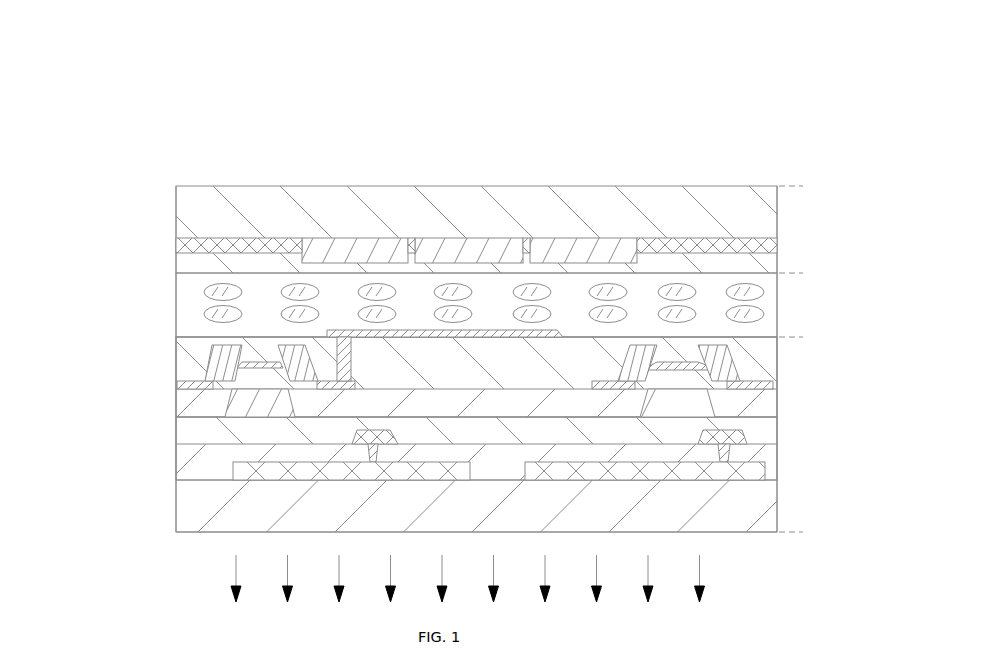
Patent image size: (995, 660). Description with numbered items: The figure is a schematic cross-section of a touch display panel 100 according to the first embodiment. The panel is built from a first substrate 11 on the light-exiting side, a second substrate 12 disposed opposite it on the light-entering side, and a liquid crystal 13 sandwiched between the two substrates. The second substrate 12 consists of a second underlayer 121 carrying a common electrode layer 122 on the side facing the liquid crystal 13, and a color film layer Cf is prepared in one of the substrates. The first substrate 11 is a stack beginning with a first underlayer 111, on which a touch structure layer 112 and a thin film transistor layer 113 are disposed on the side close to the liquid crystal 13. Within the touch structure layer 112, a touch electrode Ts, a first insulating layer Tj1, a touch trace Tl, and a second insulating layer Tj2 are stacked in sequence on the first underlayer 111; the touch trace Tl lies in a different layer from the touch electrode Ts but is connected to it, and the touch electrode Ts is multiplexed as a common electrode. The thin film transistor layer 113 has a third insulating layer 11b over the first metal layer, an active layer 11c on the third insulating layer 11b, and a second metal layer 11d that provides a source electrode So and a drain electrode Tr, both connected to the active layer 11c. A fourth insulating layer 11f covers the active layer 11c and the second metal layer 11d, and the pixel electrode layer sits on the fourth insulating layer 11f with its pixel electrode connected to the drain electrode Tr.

The touch display panel 100 is at (746, 133).
The second substrate 12 is at (805, 186).
The second underlayer 121 is at (387, 192).
The common electrode layer 122 is at (650, 258).
The color film layer Cf is at (478, 245).
The liquid crystal 13 is at (760, 292).
The first substrate 11 is at (805, 337).
The first underlayer 111 is at (182, 523).
The touch structure layer 112 is at (112, 415).
The touch electrode Ts is at (187, 484).
The first insulating layer Tj1 is at (233, 470).
The touch trace Tl is at (190, 437).
The second insulating layer Tj2 is at (353, 436).
The thin film transistor layer 113 is at (102, 323).
The third insulating layer 11b is at (230, 372).
The active layer 11c is at (250, 360).
The second metal layer 11d is at (292, 146).
The source electrode So is at (228, 348).
The drain electrode Tr is at (294, 348).
The fourth insulating layer 11f is at (195, 348).